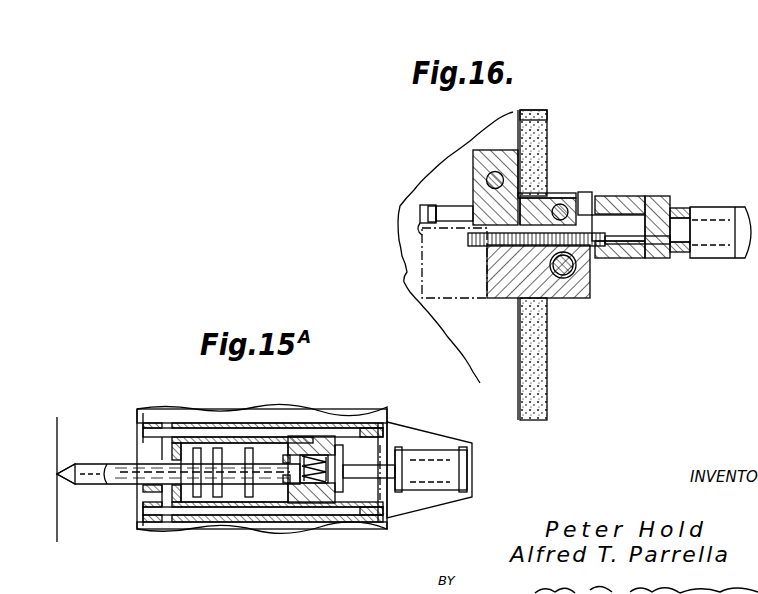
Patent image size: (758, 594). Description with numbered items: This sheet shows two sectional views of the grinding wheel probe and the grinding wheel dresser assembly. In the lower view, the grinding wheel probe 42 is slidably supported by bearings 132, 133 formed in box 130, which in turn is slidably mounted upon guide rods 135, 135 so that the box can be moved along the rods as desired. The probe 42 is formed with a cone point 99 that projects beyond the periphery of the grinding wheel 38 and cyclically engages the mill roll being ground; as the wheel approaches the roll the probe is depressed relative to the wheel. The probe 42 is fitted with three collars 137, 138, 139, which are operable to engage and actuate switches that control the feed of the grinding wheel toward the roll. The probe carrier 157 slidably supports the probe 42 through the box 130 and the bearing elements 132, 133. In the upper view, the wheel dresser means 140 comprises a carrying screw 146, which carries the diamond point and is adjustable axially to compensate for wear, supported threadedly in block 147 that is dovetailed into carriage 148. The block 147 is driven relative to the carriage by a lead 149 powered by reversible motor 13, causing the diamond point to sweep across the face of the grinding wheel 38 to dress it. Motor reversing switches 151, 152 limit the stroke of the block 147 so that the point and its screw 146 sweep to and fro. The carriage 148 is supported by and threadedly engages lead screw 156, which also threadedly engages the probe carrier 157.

In FIG. 16, the grinding wheel dresser means 140 is at (580, 304).
In FIG. 16, the grinding wheel 38 is at (548, 122).
In FIG. 16, the carriage 148 is at (490, 200).
In FIG. 16, the lead screw 156 is at (497, 164).
In FIG. 16, the motor reversing switch 151 is at (426, 208).
In FIG. 16, the lead 149 is at (454, 263).
In FIG. 16, the block 147 is at (512, 290).
In FIG. 16, the carrying screw 146 is at (577, 272).
In FIG. 16, the motor reversing switch 152 is at (586, 196).
In FIG. 16, the reversible motor M13 13 is at (718, 228).
In FIG. 15A, the bearing 132 is at (140, 462).
In FIG. 15A, the probe carrier 157 is at (195, 414).
In FIG. 15A, the box 130 is at (253, 424).
In FIG. 15A, the guide rods 135 is at (352, 423).
In FIG. 15A, the bearing 133 is at (305, 440).
In FIG. 15A, the grinding wheel probe 42 is at (90, 472).
In FIG. 15A, the cone point 99 is at (58, 477).
In FIG. 15A, the collar 137 is at (199, 494).
In FIG. 15A, the collar 138 is at (218, 494).
In FIG. 15A, the collar 139 is at (250, 494).